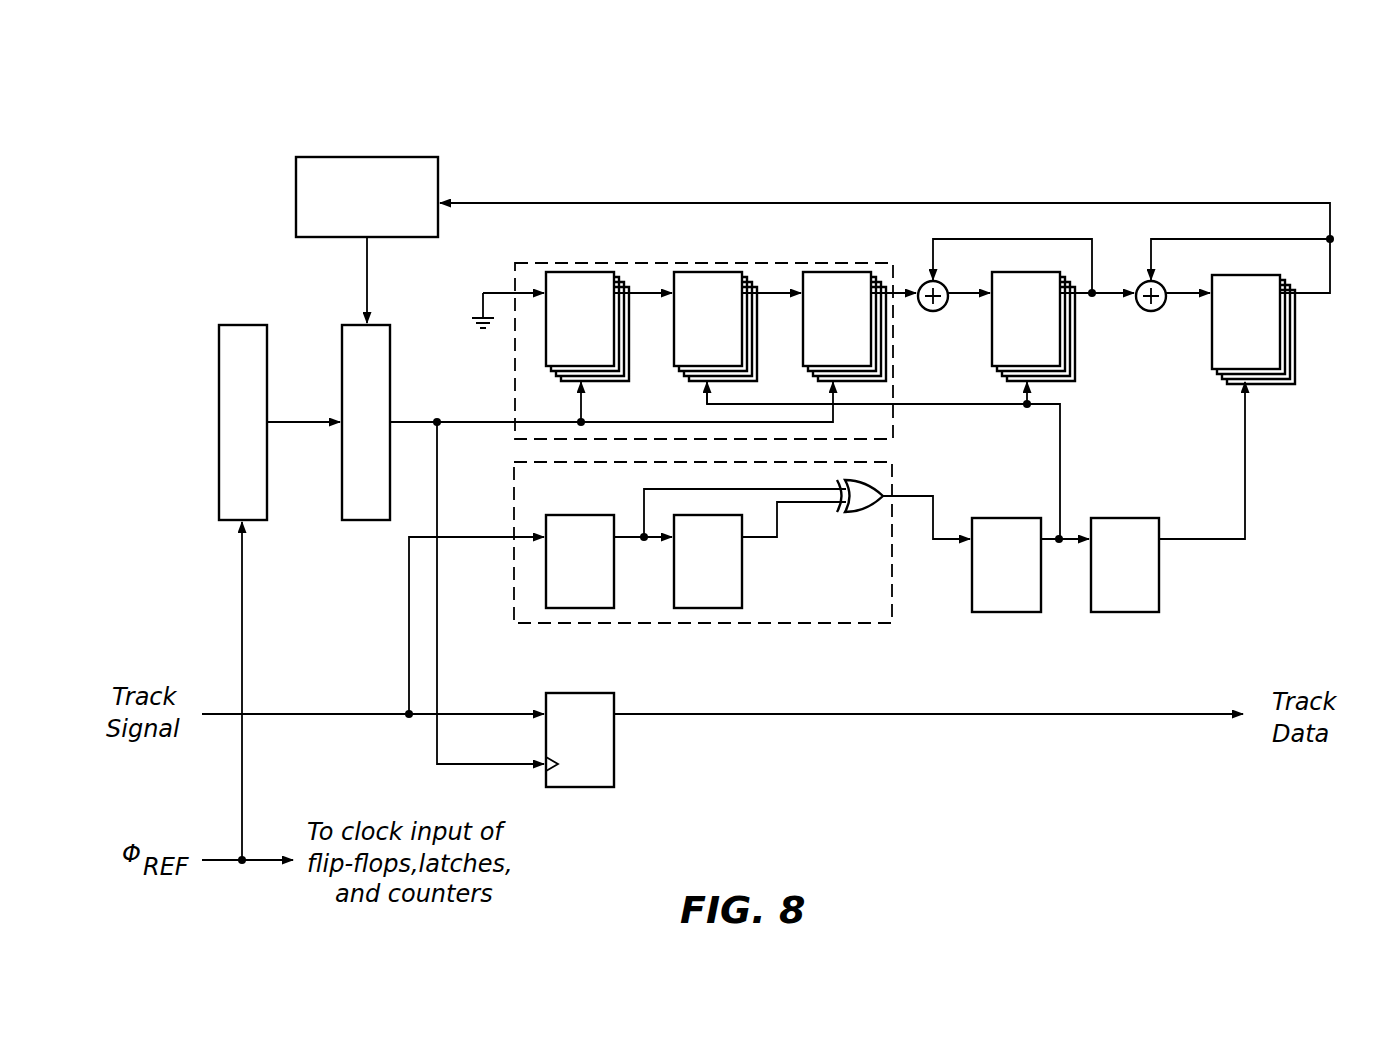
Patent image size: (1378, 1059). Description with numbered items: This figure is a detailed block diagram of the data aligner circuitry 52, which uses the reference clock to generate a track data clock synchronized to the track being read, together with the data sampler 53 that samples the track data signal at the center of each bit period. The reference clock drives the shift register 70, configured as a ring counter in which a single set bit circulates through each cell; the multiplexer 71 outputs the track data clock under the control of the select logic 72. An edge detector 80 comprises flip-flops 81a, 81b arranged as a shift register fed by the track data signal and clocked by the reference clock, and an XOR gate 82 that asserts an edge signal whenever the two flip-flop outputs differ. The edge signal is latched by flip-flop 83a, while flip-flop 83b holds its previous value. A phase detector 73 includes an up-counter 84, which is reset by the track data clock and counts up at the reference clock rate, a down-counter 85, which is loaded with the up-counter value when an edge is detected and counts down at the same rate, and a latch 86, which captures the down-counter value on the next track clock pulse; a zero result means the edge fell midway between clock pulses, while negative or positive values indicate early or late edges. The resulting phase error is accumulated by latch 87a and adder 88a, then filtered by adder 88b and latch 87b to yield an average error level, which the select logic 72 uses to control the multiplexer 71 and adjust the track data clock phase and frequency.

The data aligner circuitry 52 is at (268, 88).
The data sampler 53 is at (562, 693).
The shift register 70 is at (243, 325).
The multiplexer 71 is at (350, 325).
The select logic 72 is at (405, 157).
The phase detector 73 is at (538, 262).
The edge detector 80 is at (513, 484).
The flip-flop 81a is at (570, 608).
The flip-flop 81b is at (718, 608).
The XOR gate 82 is at (855, 512).
The flip-flop 83a is at (1014, 518).
The flip-flop 83b is at (1120, 518).
The up-counter 84 is at (571, 272).
The down-counter 85 is at (699, 272).
The latch 86 is at (826, 272).
The latch 87a is at (1078, 370).
The latch 87b is at (1298, 372).
The adder 88a is at (925, 312).
The adder 88b is at (1143, 312).